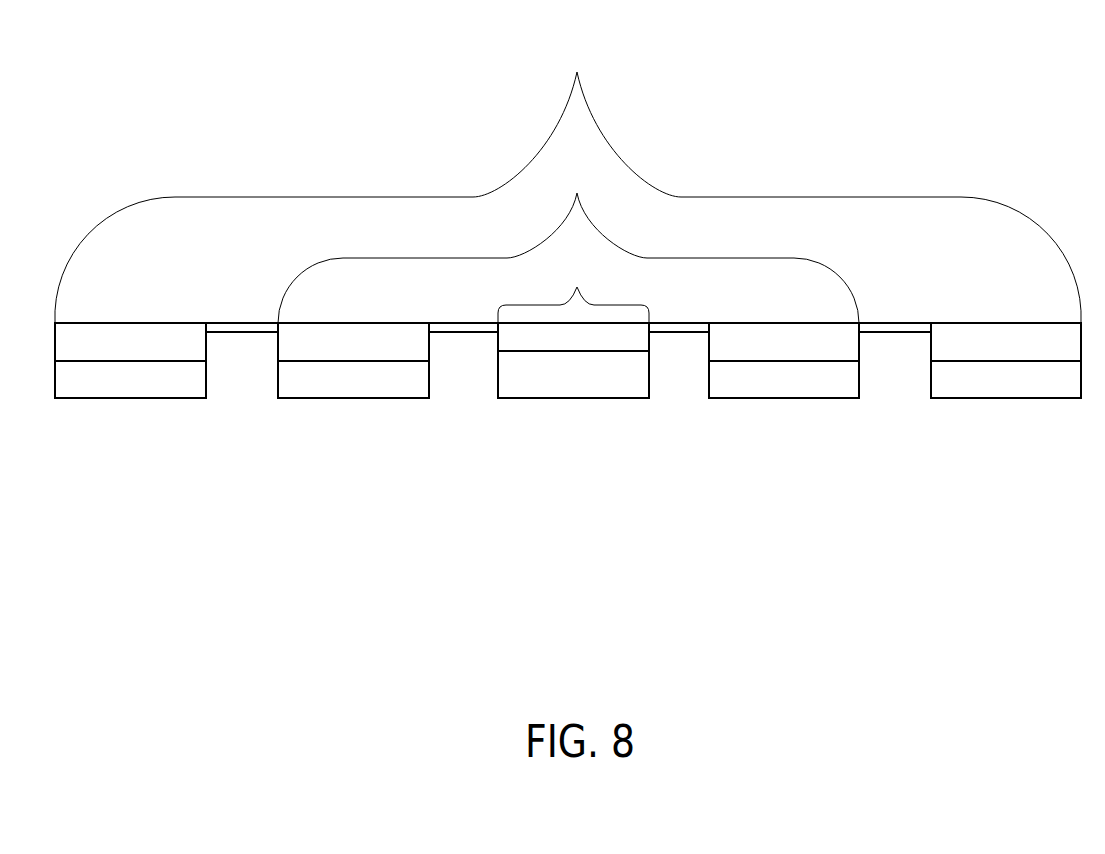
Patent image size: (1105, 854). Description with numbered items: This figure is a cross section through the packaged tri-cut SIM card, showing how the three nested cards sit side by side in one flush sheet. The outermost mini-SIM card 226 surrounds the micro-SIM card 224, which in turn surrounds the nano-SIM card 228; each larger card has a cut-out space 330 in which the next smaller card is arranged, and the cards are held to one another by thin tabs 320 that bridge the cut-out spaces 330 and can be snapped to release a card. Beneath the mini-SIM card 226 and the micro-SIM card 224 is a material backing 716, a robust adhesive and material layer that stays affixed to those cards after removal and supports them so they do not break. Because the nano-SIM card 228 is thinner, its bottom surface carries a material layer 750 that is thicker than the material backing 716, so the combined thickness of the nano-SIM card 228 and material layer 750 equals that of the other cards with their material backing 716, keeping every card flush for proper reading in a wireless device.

The mini-SIM card 226 is at (568, 181).
The micro-SIM card 224 is at (568, 241).
The nano-SIM card 228 is at (573, 290).
The tabs 320 is at (242, 323).
The cut-out space 330 is at (240, 378).
The material backing 716 is at (128, 378).
The material layer 750 is at (568, 380).